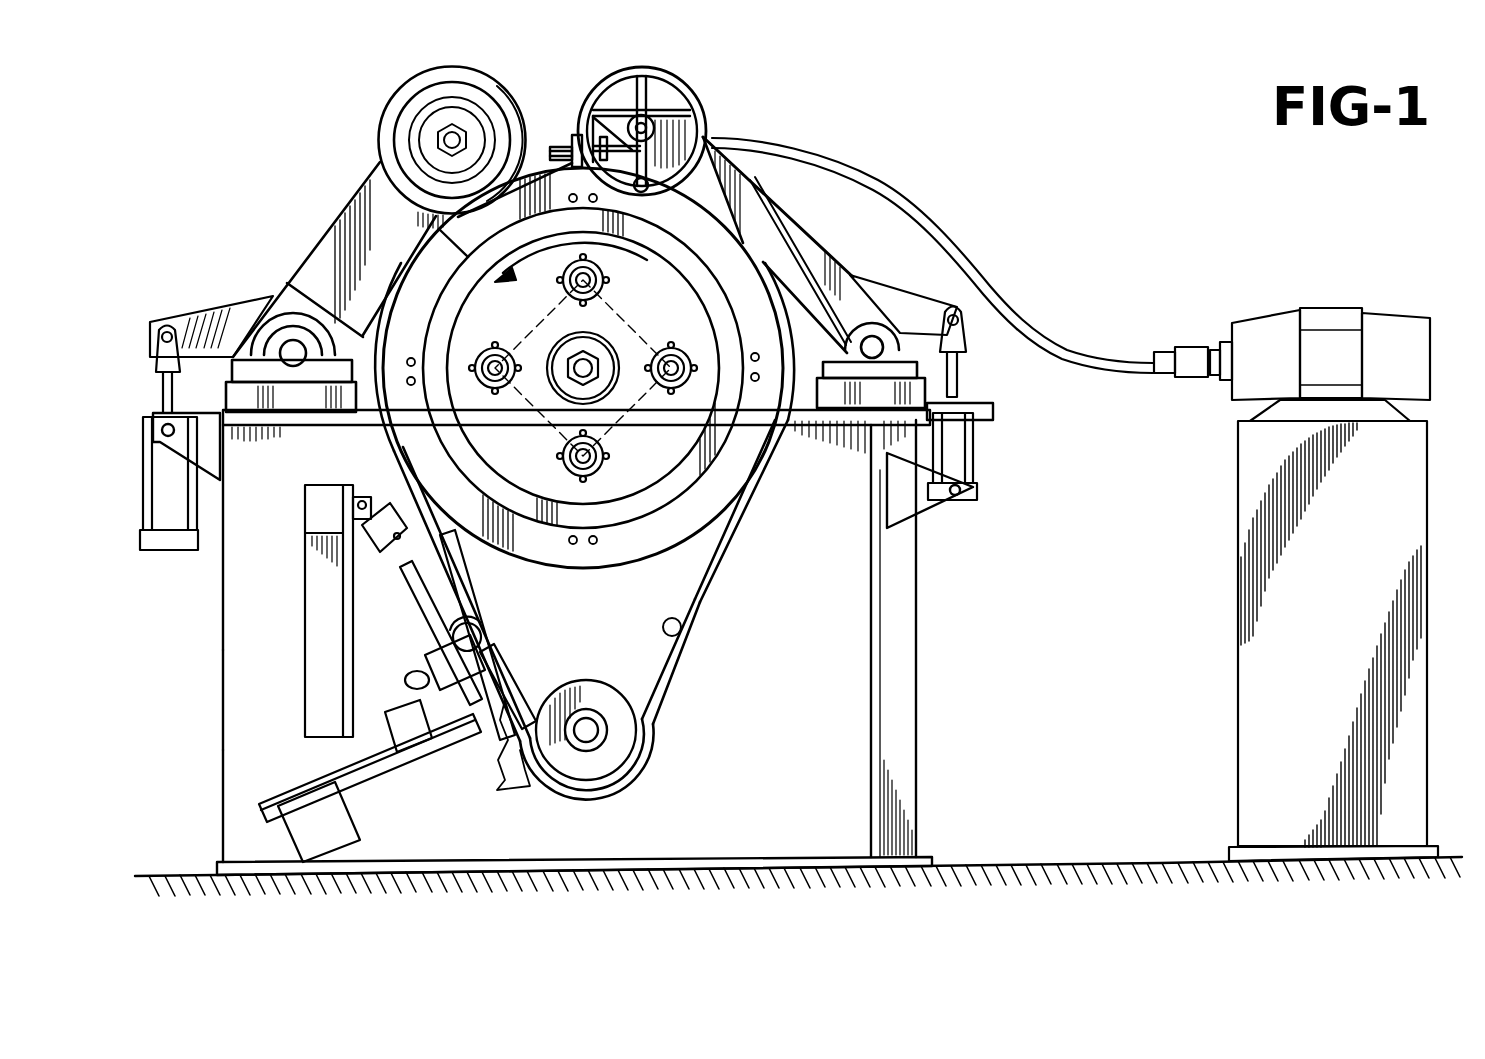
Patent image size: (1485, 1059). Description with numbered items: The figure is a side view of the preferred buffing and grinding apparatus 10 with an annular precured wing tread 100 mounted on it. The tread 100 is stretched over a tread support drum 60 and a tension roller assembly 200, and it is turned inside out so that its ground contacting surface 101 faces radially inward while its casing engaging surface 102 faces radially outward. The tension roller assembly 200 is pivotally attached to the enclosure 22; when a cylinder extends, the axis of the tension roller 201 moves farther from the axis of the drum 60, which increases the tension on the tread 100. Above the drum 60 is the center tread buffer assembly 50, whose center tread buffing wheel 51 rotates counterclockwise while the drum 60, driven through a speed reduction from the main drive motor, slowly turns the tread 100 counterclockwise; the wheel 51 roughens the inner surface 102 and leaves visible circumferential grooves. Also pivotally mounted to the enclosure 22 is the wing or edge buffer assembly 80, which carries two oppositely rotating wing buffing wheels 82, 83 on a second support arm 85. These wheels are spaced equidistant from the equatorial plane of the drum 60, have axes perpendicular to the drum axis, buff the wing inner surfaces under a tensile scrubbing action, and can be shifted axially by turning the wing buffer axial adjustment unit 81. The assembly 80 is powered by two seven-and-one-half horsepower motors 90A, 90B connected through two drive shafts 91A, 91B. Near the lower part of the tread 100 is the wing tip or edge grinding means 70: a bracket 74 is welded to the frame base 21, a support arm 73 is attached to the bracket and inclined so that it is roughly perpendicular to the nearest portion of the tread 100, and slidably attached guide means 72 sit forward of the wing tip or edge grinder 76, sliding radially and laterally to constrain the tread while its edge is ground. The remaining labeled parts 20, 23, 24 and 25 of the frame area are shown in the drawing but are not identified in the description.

The apparatus 10 is at (868, 128).
The cabinet frame 20 is at (940, 600).
The frame base 21 is at (925, 858).
The enclosure 22 is at (258, 600).
The cabinet panel 23 is at (262, 700).
The cabinet lower panel 24 is at (235, 770).
The cabinet column 25 is at (917, 690).
The center tread buffer assembly 50 is at (318, 238).
The center tread buffing wheel 51 is at (400, 106).
The tread support drum 60 is at (740, 465).
The wing tip or edge grinding means 70 is at (445, 795).
The guide means 72 is at (395, 630).
The support arm 73 is at (320, 792).
The bracket 74 is at (307, 840).
The wing tip or edge grinder 76 is at (510, 690).
The wing or edge buffer assembly 80 is at (705, 90).
The wing buffer axial adjustment unit 81 is at (665, 72).
The wing or edge buffing wheel 82 is at (542, 106).
The wing or edge buffing wheel 83 is at (572, 135).
The second support arm 85 is at (766, 223).
The motor 90A is at (1296, 549).
The motor 90B is at (1266, 312).
The drive shaft 91A is at (932, 255).
The drive shaft 91B is at (945, 230).
The annular precured wing tread 100 is at (712, 575).
The ground contacting surface 101 is at (681, 627).
The casing engaging surface 102 is at (690, 660).
The tension roller assembly 200 is at (620, 746).
The tension roller 201 is at (600, 760).